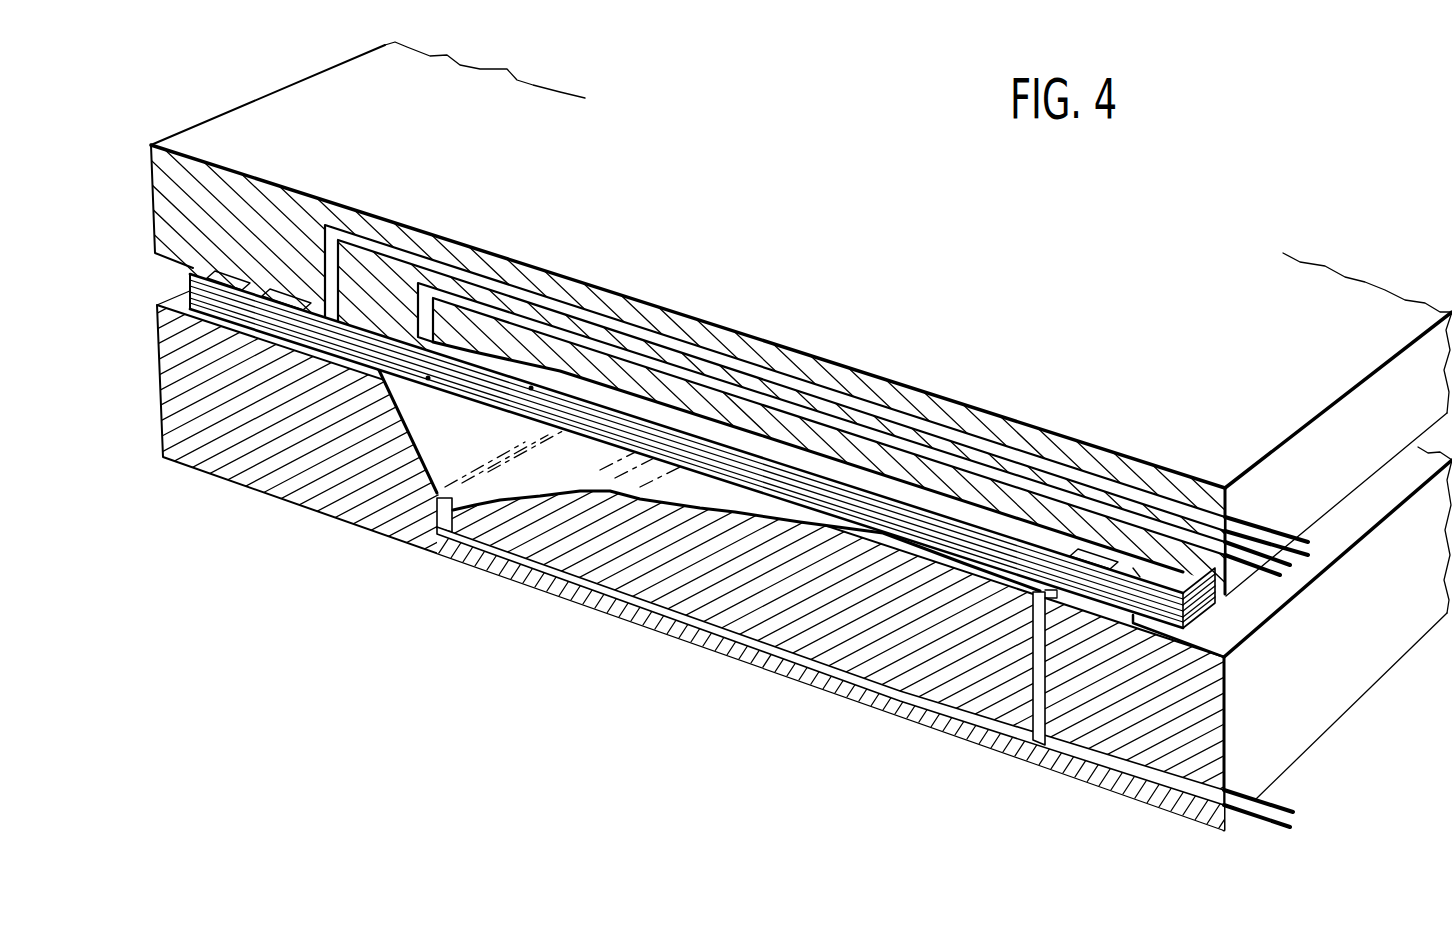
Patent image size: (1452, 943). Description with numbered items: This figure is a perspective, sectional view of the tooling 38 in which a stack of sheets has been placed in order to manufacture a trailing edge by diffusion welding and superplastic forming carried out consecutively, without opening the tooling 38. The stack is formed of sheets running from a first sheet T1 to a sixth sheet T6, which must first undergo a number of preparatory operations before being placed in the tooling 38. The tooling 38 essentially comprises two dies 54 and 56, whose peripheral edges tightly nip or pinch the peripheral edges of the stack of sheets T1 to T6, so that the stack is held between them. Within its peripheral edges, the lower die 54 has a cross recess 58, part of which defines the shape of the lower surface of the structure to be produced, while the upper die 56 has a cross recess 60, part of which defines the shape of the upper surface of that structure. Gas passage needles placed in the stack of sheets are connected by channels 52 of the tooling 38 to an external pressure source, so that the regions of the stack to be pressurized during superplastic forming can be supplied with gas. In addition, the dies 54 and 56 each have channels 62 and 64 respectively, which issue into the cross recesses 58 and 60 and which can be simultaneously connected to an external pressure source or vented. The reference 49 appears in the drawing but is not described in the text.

The tooling 38 is at (234, 96).
The contact opening 49 is at (392, 354).
The channels 52 is at (650, 335).
The die 54 is at (920, 665).
The die 56 is at (915, 400).
The cross recess 58 is at (722, 498).
The cross recess 60 is at (760, 432).
The channel 62 is at (540, 564).
The channel 64 is at (515, 318).
The sheet T1 is at (428, 380).
The sheet T6 is at (530, 389).